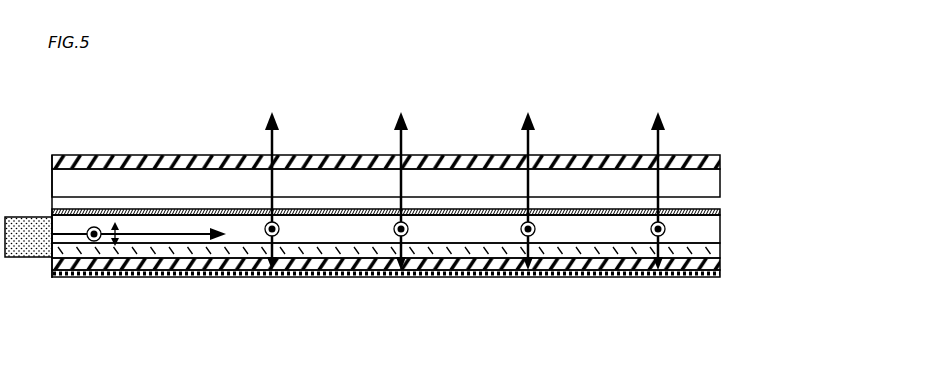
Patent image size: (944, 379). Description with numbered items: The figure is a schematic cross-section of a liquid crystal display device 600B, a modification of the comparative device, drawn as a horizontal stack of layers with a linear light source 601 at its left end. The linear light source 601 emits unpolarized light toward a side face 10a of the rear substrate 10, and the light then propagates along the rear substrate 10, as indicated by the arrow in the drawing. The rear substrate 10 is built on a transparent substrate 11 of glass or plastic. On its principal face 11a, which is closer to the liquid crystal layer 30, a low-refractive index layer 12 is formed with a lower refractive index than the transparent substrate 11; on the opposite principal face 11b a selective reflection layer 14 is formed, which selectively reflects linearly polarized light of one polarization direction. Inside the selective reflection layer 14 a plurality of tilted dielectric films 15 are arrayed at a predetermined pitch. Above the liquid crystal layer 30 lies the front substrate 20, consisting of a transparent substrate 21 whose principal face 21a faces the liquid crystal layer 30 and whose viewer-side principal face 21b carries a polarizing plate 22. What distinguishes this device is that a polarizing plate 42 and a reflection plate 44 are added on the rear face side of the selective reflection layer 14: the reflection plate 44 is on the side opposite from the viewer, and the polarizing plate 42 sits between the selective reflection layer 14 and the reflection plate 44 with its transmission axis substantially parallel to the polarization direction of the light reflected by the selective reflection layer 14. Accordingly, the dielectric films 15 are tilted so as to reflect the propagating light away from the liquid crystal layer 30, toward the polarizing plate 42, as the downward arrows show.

The liquid crystal display device 600B is at (716, 97).
The linear light source 601 is at (35, 249).
The rear substrate 10 is at (437, 256).
The side face of the rear substrate 10a is at (56, 221).
The transparent substrate 11 is at (718, 233).
The principal face of the transparent substrate 11a is at (558, 223).
The principal face of the transparent substrate 11b is at (593, 239).
The low-refractive index layer 12 is at (718, 214).
The selective reflection layer 14 is at (421, 276).
The dielectric films 15 is at (431, 254).
The front substrate 20 is at (436, 172).
The transparent substrate 21 is at (718, 178).
The principal face of the transparent substrate 21a is at (593, 196).
The viewer-side principal face of the transparent substrate 21b is at (574, 174).
The polarizing plate 22 is at (722, 161).
The liquid crystal layer 30 is at (718, 209).
The polarizing plate 42 is at (718, 266).
The reflection plate 44 is at (421, 281).